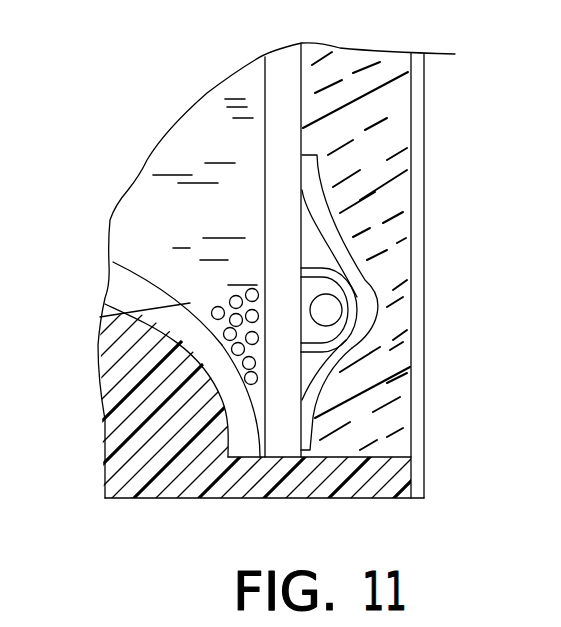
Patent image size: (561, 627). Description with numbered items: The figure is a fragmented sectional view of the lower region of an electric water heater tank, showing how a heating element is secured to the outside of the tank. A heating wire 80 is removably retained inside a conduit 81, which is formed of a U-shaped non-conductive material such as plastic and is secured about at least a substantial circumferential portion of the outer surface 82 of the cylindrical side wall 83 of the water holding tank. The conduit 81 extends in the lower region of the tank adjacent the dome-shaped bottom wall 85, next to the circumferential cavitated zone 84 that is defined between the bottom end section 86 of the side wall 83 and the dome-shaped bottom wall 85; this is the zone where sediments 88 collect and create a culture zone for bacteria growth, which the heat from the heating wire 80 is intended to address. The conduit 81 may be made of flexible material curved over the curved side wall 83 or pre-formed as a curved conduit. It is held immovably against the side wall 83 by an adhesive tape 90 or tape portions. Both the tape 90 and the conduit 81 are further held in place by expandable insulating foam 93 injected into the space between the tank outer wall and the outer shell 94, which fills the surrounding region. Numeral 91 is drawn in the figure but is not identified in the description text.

The heating wire 80 is at (337, 313).
The conduit 81 is at (344, 341).
The outer surface 82 is at (307, 83).
The cylindrical side wall 83 is at (283, 100).
The circumferential cavitated zone 84 is at (150, 312).
The dome-shaped bottom wall 85 is at (108, 415).
The bottom end section 86 is at (283, 347).
The sediments 88 is at (224, 296).
The adhesive tape 90 is at (350, 243).
The flap lip 91 is at (333, 357).
The expandable insulating foam 93 is at (400, 107).
The outer shell 94 is at (425, 150).